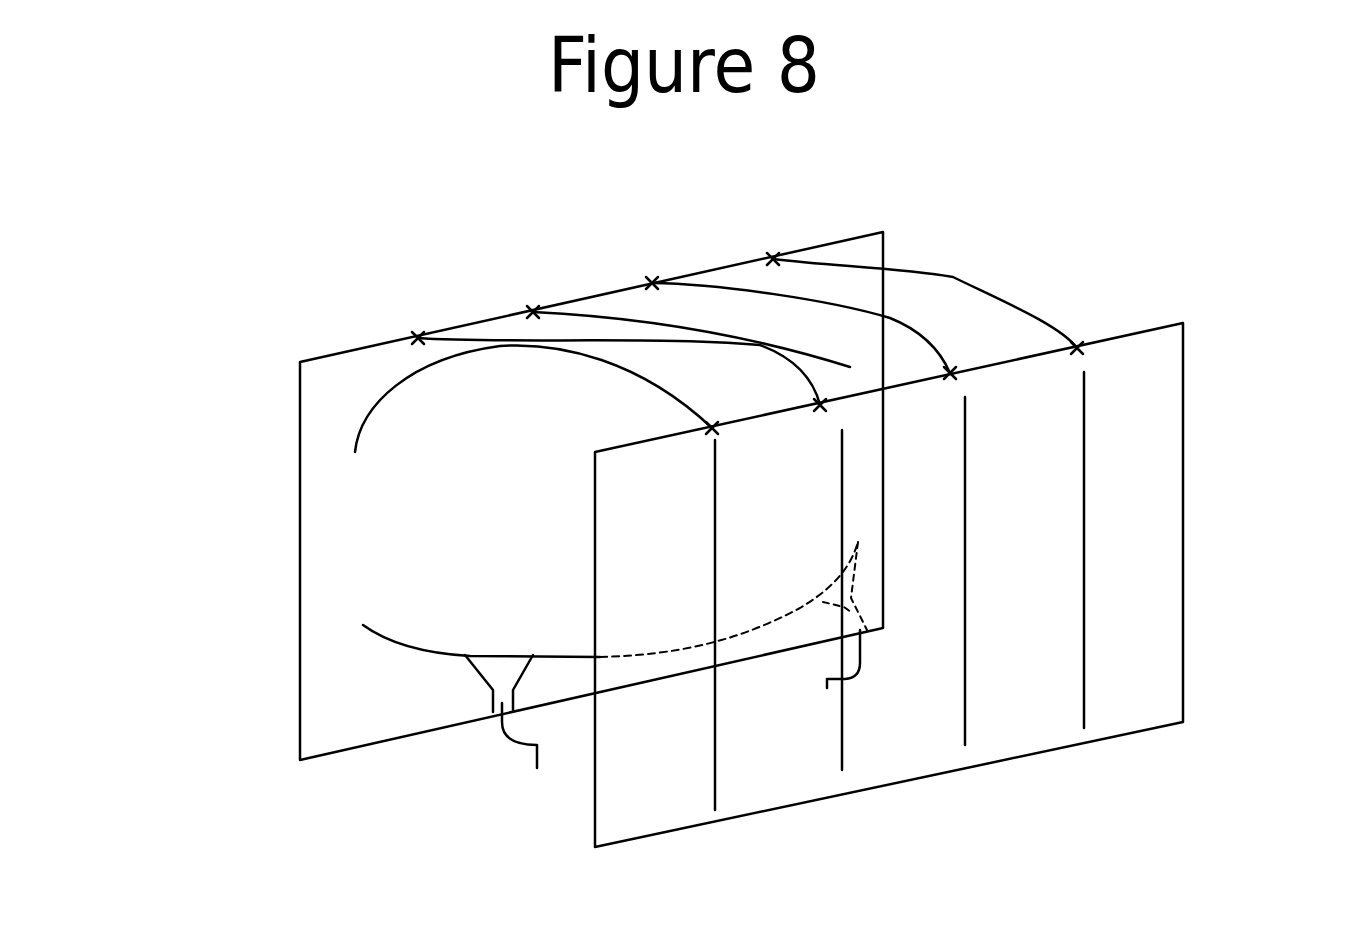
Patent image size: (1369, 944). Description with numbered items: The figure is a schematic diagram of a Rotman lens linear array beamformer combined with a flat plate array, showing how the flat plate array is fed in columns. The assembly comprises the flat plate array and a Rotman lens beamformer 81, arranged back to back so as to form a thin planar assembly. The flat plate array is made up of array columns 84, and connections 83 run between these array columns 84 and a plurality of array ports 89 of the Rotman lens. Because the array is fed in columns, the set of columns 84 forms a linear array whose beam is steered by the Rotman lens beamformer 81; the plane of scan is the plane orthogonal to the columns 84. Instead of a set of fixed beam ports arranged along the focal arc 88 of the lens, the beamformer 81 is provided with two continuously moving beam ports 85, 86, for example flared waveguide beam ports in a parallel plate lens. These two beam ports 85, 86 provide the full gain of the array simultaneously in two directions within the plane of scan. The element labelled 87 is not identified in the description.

The Rotman lens beamformer 81 is at (459, 490).
The connections 83 is at (953, 277).
The array columns 84 is at (1142, 565).
The beam port 85 is at (827, 688).
The beam port 86 is at (518, 778).
The upper surface of dome 87 is at (387, 398).
The focal arc 88 is at (350, 633).
The array ports 89 is at (533, 312).